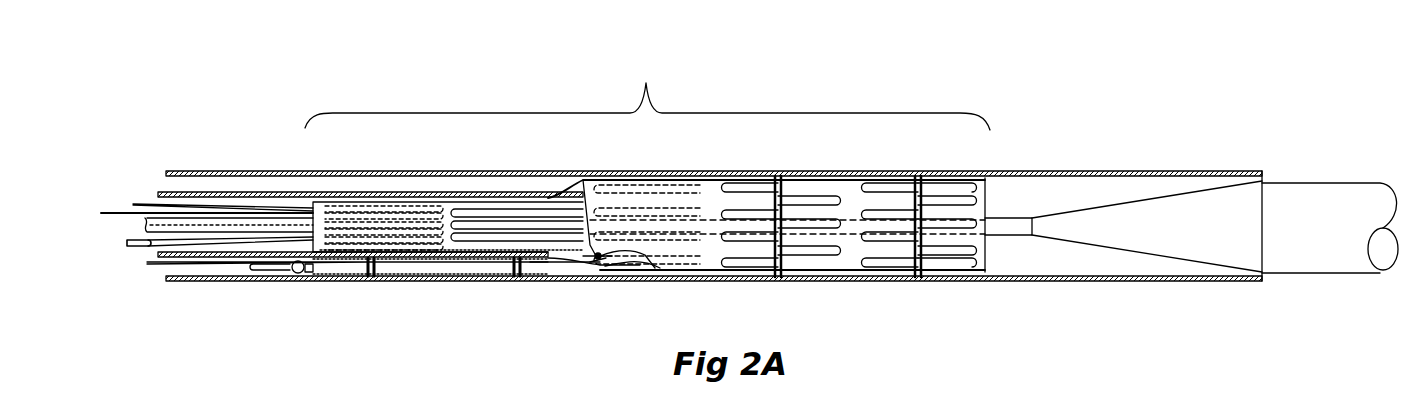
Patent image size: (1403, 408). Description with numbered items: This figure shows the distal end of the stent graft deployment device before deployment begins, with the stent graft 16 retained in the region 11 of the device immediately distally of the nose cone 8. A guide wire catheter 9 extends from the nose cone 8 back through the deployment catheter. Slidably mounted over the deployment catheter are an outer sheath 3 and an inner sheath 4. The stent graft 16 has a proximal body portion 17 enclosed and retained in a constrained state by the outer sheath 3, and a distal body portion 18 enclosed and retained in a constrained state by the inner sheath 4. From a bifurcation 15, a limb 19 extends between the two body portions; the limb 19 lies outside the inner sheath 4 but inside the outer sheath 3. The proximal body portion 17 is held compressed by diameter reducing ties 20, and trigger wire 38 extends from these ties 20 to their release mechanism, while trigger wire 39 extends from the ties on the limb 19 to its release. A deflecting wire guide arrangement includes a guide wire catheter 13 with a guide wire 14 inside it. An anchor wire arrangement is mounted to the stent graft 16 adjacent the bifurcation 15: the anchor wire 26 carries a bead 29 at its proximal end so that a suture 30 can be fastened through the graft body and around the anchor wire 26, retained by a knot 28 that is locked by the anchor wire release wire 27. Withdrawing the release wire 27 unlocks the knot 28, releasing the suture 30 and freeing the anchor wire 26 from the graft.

The outer sheath 3 is at (1137, 282).
The inner sheath 4 is at (261, 202).
The nose cone 8 is at (1318, 210).
The guide wire catheter 9 is at (1008, 222).
The region 11 is at (647, 93).
The guide wire catheter 13 is at (200, 243).
The guide wire 14 is at (137, 247).
The bifurcation 15 is at (548, 290).
The stent graft 16 is at (783, 168).
The proximal body portion 17 is at (850, 256).
The distal body portion 18 is at (447, 217).
The limb 19 is at (455, 282).
The diameter reducing ties 20 is at (783, 252).
The anchor wire 26 is at (590, 262).
The anchor wire release wire 27 is at (625, 271).
The knot 28 is at (157, 270).
The bead 29 is at (584, 215).
The suture 30 is at (652, 272).
The trigger wire 38 is at (148, 198).
The trigger wire 39 is at (121, 207).